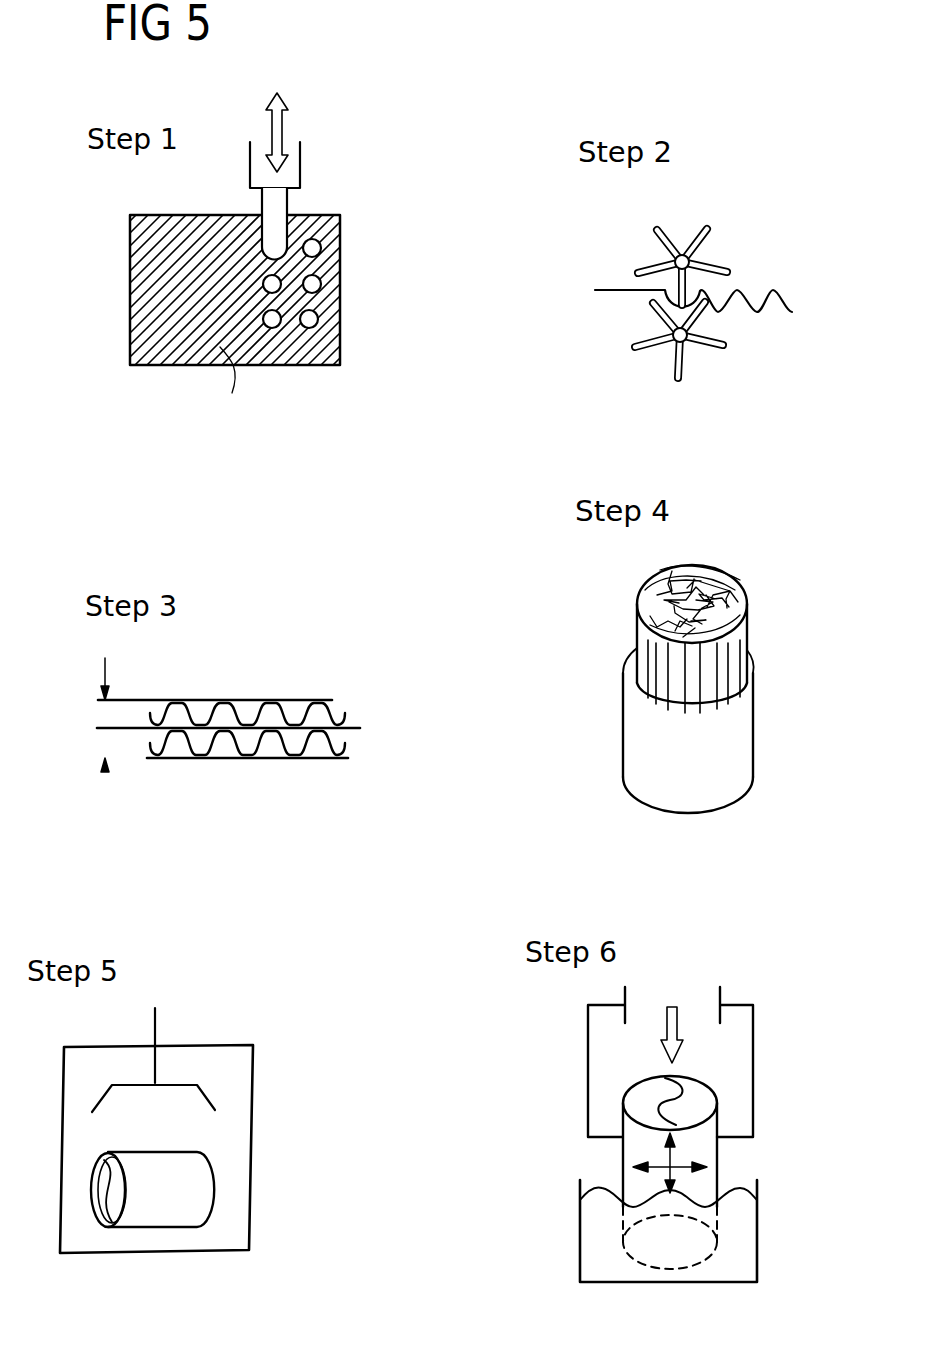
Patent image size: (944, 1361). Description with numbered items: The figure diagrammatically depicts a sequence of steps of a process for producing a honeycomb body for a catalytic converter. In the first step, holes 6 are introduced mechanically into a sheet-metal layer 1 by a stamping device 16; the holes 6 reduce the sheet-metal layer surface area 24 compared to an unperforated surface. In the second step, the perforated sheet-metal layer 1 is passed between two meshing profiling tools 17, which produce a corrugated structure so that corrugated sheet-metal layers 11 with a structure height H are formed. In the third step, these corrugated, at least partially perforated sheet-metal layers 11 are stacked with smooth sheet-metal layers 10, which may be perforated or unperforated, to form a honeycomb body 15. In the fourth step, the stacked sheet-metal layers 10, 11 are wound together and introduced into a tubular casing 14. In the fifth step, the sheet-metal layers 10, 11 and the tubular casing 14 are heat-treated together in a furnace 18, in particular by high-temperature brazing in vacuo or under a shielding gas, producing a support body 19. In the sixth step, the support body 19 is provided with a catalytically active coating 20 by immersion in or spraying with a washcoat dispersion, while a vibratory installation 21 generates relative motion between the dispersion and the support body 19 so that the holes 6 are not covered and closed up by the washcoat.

The sheet-metal layer 1 is at (830, 280).
The holes 6 is at (310, 319).
The smooth sheet-metal layers 10 is at (357, 723).
The corrugated sheet-metal layers 11 is at (343, 743).
The tubular casing 14 is at (737, 747).
The honeycomb body 15 is at (257, 690).
The stamping device 16 is at (300, 158).
The profiling tools 17 is at (707, 233).
The furnace 18 is at (253, 1138).
The support body 19 is at (152, 1217).
The catalytically active coating 20 is at (747, 1245).
The vibratory installation 21 is at (753, 1068).
The sheet-metal layer surface area 24 is at (142, 293).
The structure height H is at (110, 715).